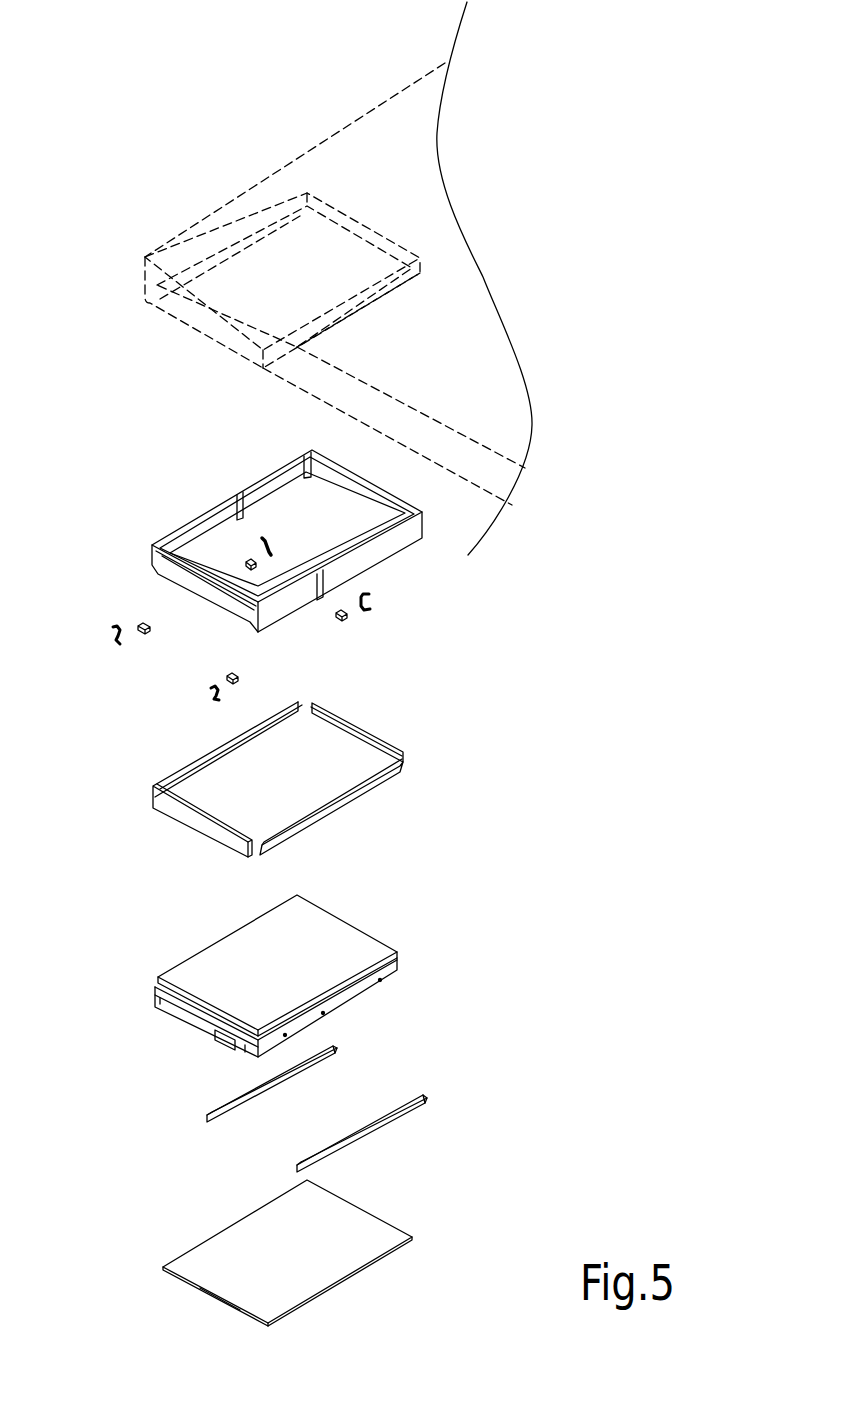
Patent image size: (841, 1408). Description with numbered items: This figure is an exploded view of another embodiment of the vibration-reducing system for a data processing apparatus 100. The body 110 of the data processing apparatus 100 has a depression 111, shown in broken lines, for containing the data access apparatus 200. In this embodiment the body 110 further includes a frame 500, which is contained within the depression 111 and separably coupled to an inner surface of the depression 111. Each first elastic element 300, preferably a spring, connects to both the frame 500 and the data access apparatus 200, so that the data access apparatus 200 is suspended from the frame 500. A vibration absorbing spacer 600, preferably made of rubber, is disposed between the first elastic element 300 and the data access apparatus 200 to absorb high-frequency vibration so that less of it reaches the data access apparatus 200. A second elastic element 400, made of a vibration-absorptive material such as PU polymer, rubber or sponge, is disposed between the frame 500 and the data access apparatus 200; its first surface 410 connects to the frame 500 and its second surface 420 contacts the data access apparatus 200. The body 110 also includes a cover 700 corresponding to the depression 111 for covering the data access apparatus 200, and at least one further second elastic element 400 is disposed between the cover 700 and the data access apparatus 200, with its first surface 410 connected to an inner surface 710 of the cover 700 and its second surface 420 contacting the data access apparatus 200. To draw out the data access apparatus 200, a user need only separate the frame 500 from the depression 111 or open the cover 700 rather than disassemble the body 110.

The data processing apparatus 100 is at (397, 143).
The body 110 is at (368, 370).
The depression 111 is at (218, 252).
The data access apparatus 200 is at (337, 967).
The first elastic element 300 is at (369, 608).
The second elastic element 400 is at (324, 944).
The first surface 410 is at (337, 808).
The second surface 420 is at (198, 763).
The frame 500 is at (368, 562).
The vibration absorbing spacer 600 is at (142, 623).
The cover 700 is at (358, 1255).
The inner surface 710 is at (242, 1285).